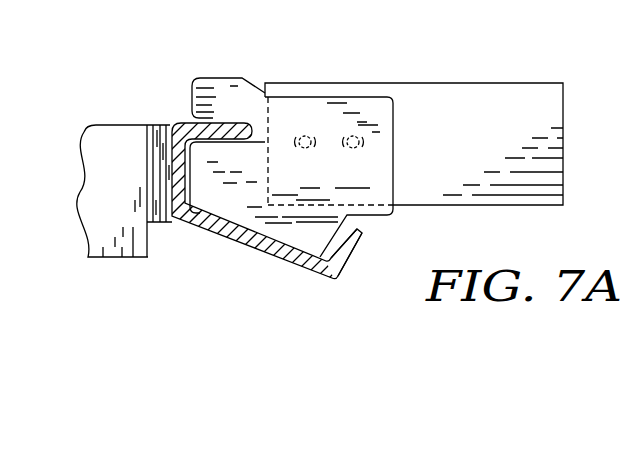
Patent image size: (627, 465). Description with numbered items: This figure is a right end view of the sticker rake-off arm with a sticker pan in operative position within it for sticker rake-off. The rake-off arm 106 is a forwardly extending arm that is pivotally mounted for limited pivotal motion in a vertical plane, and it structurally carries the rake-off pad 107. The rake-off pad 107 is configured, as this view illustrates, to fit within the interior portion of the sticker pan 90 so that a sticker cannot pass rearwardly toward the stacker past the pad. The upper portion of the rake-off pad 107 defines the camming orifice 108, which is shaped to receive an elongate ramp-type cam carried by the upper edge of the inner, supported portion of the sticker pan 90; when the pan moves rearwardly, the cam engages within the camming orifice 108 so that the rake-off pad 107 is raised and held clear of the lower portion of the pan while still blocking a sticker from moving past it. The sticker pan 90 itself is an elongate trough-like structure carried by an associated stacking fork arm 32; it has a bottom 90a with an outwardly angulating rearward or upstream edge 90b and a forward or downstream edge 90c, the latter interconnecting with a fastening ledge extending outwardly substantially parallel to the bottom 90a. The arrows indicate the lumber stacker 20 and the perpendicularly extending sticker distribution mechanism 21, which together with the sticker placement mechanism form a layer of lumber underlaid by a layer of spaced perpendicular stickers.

The lumber stacker 20 is at (116, 204).
The sticker distribution mechanism 21 is at (376, 134).
The stacking fork arm 32 is at (75, 130).
The sticker pan 90 is at (281, 202).
The bottom 90a is at (350, 258).
The rearward or upstream edge 90b is at (220, 227).
The forward or downstream edge 90c is at (172, 208).
The rake-off arm 106 is at (442, 112).
The rake-off pad 107 is at (298, 83).
The camming orifice 108 is at (213, 118).